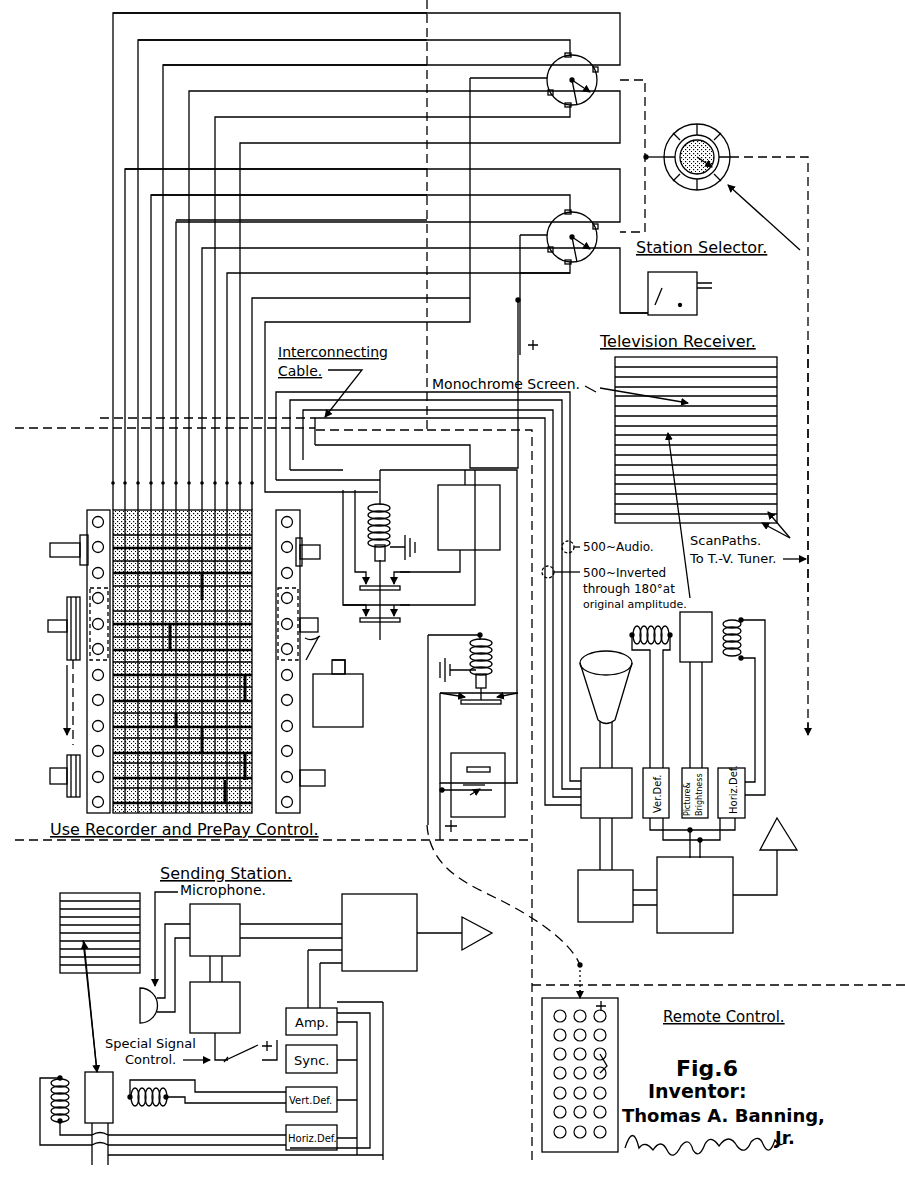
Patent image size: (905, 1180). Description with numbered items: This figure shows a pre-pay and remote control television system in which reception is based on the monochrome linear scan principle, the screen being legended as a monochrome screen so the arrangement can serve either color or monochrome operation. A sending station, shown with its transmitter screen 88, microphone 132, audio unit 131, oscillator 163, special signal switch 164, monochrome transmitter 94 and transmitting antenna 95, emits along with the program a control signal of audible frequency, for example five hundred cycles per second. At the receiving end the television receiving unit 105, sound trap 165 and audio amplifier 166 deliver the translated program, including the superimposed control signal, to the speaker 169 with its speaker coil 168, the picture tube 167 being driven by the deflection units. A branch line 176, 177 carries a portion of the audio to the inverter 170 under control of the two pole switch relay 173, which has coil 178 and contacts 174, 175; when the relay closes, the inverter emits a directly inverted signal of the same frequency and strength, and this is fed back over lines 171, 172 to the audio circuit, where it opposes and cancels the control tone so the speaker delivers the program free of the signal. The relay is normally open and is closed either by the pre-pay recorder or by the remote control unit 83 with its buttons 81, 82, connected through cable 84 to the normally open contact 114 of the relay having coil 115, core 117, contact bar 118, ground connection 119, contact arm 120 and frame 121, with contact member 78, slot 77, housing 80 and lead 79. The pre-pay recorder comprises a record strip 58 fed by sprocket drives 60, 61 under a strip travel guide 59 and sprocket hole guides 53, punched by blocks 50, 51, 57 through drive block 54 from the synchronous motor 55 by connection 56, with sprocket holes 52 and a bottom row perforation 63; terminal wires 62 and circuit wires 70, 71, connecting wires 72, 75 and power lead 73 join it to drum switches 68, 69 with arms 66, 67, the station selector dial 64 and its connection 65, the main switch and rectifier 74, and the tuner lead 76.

The punch block 50 is at (312, 543).
The punch block 51 is at (308, 770).
The sprocket hole 52 is at (293, 748).
The sprocket hole guide 53 is at (90, 588).
The drive block 54 is at (310, 630).
The synchronous motor 55 is at (348, 680).
The motor drive connection 56 is at (322, 640).
The punch block 57 is at (87, 548).
The record strip 58 is at (140, 806).
The strip travel guide 59 is at (72, 750).
The sprocket drive 60 is at (70, 605).
The sprocket drive 61 is at (70, 792).
The terminal wires 62 is at (113, 497).
The bottom row perforation 63 is at (254, 803).
The station selector dial 64 is at (708, 128).
The selector connection 65 is at (657, 152).
The drum switch arm 66 is at (578, 260).
The drum switch arm 67 is at (578, 106).
The drum switch 68 is at (565, 258).
The drum switch 69 is at (552, 100).
The circuit wires 70 is at (470, 172).
The circuit wires 71 is at (475, 20).
The connecting wire 72 is at (520, 292).
The power lead 73 is at (643, 296).
The main switch and rectifier 74 is at (716, 292).
The connecting wire 75 is at (472, 182).
The tuner lead 76 is at (807, 346).
The contact slot 77 is at (478, 762).
The contact member 78 is at (472, 782).
The contact lead 79 is at (478, 796).
The contact housing 80 is at (498, 760).
The remote control button 81 is at (607, 1043).
The remote control button 82 is at (607, 1066).
The remote control unit 83 is at (655, 1010).
The remote control cable 84 is at (462, 888).
The transmitter screen 88 is at (105, 905).
The monochrome transmitter 94 is at (370, 893).
The transmitting antenna 95 is at (478, 945).
The television receiving unit 105 is at (702, 933).
The normally open contact 114 is at (427, 825).
The relay coil 115 is at (470, 658).
The relay core 117 is at (487, 684).
The contact bar 118 is at (470, 706).
The ground connection 119 is at (462, 704).
The contact arm 120 is at (505, 708).
The relay frame 121 is at (427, 776).
The audio unit 131 is at (238, 920).
The microphone 132 is at (140, 1008).
The oscillator 163 is at (240, 990).
The special signal switch 164 is at (240, 1062).
The sound trap 165 is at (603, 922).
The audio amplifier 166 is at (581, 817).
The picture tube 167 is at (598, 758).
The speaker coil 168 is at (618, 697).
The speaker 169 is at (612, 695).
The inverter 170 is at (438, 546).
The inverted signal line 171 is at (560, 485).
The inverted signal line 172 is at (560, 520).
The two pole switch relay 173 is at (386, 508).
The inverter input line 174 is at (440, 606).
The inverter input line 175 is at (433, 573).
The branch line 176 is at (545, 430).
The branch line 177 is at (553, 445).
The relay coil 178 is at (390, 528).